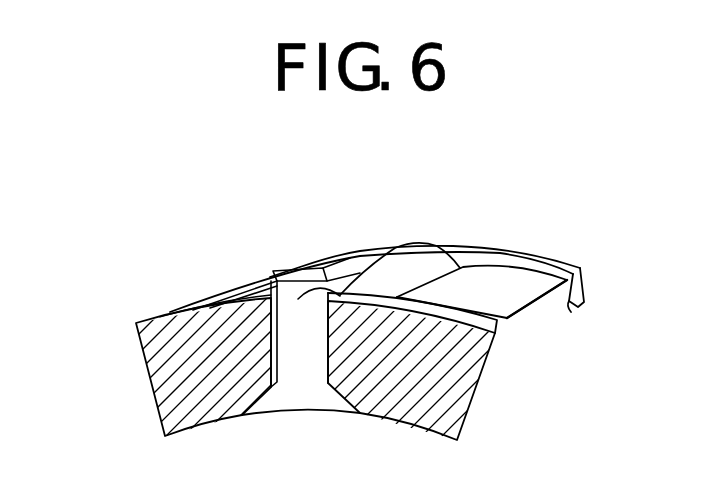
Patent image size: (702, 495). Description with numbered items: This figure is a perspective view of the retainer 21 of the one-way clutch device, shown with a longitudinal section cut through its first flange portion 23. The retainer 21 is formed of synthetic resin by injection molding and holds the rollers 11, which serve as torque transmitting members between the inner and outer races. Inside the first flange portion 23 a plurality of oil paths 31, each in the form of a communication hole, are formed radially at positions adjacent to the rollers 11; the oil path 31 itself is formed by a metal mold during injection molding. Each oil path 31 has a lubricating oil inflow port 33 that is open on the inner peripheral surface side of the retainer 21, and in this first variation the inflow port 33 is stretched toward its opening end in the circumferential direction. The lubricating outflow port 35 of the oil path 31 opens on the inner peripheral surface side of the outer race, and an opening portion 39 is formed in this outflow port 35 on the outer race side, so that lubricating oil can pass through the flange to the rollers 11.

The roller 11 is at (407, 264).
The retainer 21 is at (320, 341).
The first flange portion 23 is at (193, 378).
The oil path 31 is at (310, 343).
The lubricating oil inflow port 33 is at (300, 390).
The lubricating outflow port 35 is at (293, 314).
The opening portion 39 is at (340, 282).